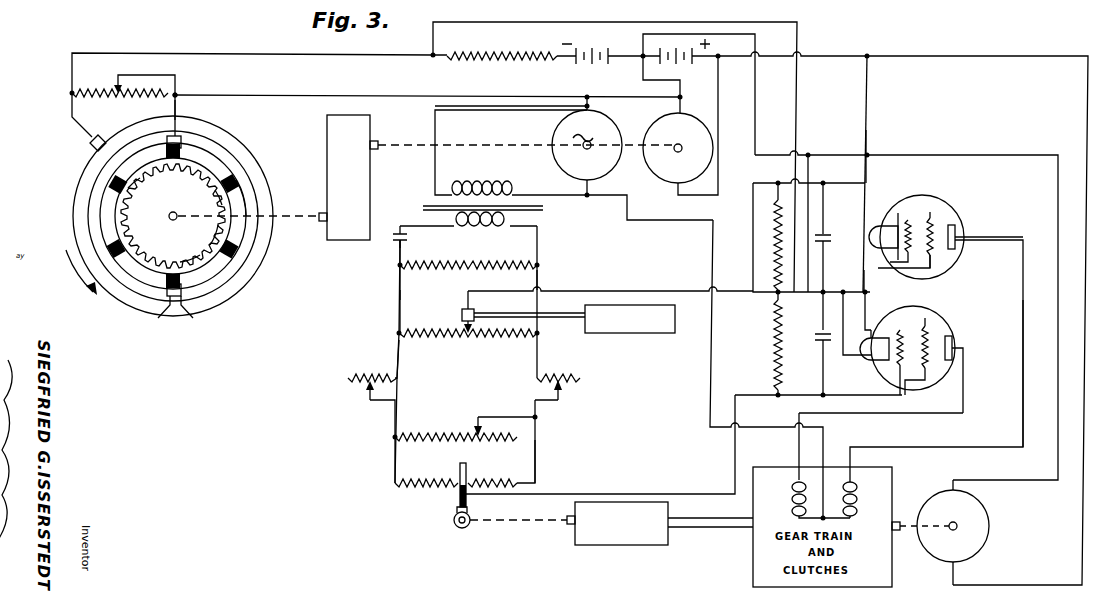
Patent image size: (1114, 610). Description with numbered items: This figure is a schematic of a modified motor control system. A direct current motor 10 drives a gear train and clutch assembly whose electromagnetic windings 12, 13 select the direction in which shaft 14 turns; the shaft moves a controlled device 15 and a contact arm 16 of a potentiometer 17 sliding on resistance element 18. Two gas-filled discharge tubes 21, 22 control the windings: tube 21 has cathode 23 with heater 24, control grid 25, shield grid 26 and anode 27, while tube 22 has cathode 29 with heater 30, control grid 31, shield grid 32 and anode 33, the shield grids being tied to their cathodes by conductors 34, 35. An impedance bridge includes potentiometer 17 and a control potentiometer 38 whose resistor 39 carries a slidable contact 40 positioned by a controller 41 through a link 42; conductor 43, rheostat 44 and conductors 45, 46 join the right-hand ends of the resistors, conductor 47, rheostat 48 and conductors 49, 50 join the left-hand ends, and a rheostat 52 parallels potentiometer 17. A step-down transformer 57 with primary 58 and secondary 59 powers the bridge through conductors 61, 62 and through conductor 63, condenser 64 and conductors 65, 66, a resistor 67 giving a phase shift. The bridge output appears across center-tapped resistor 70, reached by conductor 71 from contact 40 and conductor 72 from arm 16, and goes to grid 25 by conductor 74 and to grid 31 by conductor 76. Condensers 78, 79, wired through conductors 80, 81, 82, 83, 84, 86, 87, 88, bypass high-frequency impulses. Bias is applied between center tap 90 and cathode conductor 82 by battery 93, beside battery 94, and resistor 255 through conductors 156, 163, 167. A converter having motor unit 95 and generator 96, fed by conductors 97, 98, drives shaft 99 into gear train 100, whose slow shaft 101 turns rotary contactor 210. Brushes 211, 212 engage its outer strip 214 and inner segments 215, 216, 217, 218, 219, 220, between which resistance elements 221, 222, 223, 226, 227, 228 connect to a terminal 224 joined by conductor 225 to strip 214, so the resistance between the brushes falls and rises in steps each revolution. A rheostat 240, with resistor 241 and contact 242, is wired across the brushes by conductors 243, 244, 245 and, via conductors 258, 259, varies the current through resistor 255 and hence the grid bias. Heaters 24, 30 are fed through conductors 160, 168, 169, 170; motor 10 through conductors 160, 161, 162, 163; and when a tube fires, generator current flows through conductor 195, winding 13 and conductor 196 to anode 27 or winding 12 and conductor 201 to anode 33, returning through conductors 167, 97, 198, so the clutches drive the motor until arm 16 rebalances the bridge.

The motor 10 is at (990, 512).
The electromagnetic winding 12 is at (792, 490).
The electromagnetic winding 13 is at (858, 490).
The shaft 14 is at (568, 526).
The controlled device 15 is at (650, 545).
The contact arm 16 is at (458, 492).
The control potentiometer 17 is at (452, 505).
The resistance element 18 is at (487, 478).
The electronic discharge tube 21 is at (960, 212).
The electronic discharge tube 22 is at (950, 320).
The cathode 23 is at (908, 218).
The heater 24 is at (892, 215).
The control grid 25 is at (934, 215).
The shield grid 26 is at (935, 258).
The anode 27 is at (957, 228).
The cathode 29 is at (893, 375).
The heater 30 is at (878, 360).
The control grid 31 is at (920, 378).
The shield grid 32 is at (935, 333).
The anode 33 is at (955, 346).
The conductor 34 is at (878, 300).
The conductor 35 is at (927, 320).
The control potentiometer 38 is at (460, 314).
The resistor 39 is at (482, 340).
The slidable contact 40 is at (476, 327).
The controller 41 is at (661, 334).
The link 42 is at (573, 320).
The conductor 43 is at (539, 370).
The rheostat 44 is at (566, 389).
The conductor 45 is at (544, 410).
The conductor 46 is at (537, 450).
The conductor 47 is at (397, 355).
The rheostat 48 is at (350, 390).
The conductor 49 is at (394, 420).
The conductor 50 is at (394, 458).
The rheostat 52 is at (470, 428).
The step-down transformer 57 is at (552, 212).
The high voltage primary 58 is at (493, 185).
The low voltage secondary 59 is at (492, 232).
The conductor 61 is at (538, 250).
The conductor 62 is at (538, 278).
The conductor 63 is at (400, 232).
The condenser 64 is at (398, 248).
The conductor 65 is at (398, 266).
The conductor 66 is at (398, 293).
The resistor 67 is at (458, 268).
The center-tapped resistor 70 is at (776, 240).
The conductor 71 is at (650, 290).
The conductor 72 is at (636, 492).
The conductor 74 is at (862, 165).
The conductor 76 is at (878, 413).
The condenser 78 is at (828, 233).
The condenser 79 is at (784, 357).
The conductor 80 is at (824, 200).
The conductor 81 is at (825, 248).
The conductor 82 is at (862, 285).
The conductor 83 is at (845, 326).
The conductor 84 is at (876, 268).
The conductor 86 is at (822, 378).
The conductor 87 is at (822, 301).
The conductor 88 is at (868, 302).
The center tap 90 is at (775, 294).
The battery 93 is at (574, 62).
The battery 94 is at (696, 66).
The motor unit 95 is at (713, 135).
The generator unit 96 is at (562, 129).
The conductor 97 is at (642, 78).
The conductor 98 is at (681, 100).
The shaft 99 is at (485, 148).
The gear train 100 is at (327, 130).
The shaft 101 is at (318, 224).
The conductor 156 is at (798, 32).
The conductor 160 is at (838, 56).
The conductor 161 is at (992, 58).
The conductor 162 is at (1000, 158).
The conductor 163 is at (756, 127).
The conductor 167 is at (824, 182).
The conductor 168 is at (868, 103).
The conductor 169 is at (876, 240).
The conductor 170 is at (822, 333).
The conductor 195 is at (711, 380).
The conductor 196 is at (1022, 378).
The conductor 198 is at (648, 98).
The conductor 201 is at (798, 445).
The rotary contactor 210 is at (266, 268).
The brush 211 is at (90, 148).
The brush 212 is at (182, 140).
The continuous metal strip 214 is at (78, 192).
The segment 215 is at (120, 168).
The segment 216 is at (110, 206).
The segment 217 is at (147, 276).
The segment 218 is at (223, 260).
The segment 219 is at (240, 192).
The segment 220 is at (200, 158).
The resistance element 221 is at (135, 188).
The resistance element 222 is at (125, 228).
The resistance element 223 is at (171, 219).
The conductive terminal 224 is at (193, 317).
The conductor 225 is at (163, 313).
The resistor member 226 is at (186, 259).
The resistor member 227 is at (219, 230).
The resistor member 228 is at (216, 198).
The rheostat 240 is at (110, 86).
The resistor 241 is at (178, 82).
The slidable contact 242 is at (122, 80).
The conductor 243 is at (65, 126).
The conductor 244 is at (178, 95).
The conductor 245 is at (172, 108).
The resistor 255 is at (463, 61).
The conductor 258 is at (369, 95).
The conductor 259 is at (256, 54).